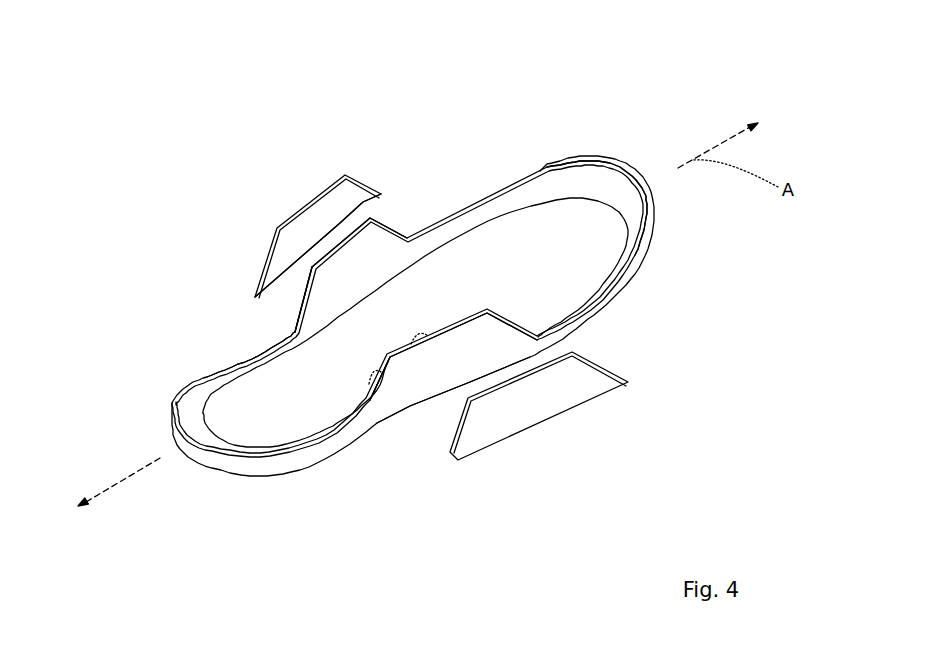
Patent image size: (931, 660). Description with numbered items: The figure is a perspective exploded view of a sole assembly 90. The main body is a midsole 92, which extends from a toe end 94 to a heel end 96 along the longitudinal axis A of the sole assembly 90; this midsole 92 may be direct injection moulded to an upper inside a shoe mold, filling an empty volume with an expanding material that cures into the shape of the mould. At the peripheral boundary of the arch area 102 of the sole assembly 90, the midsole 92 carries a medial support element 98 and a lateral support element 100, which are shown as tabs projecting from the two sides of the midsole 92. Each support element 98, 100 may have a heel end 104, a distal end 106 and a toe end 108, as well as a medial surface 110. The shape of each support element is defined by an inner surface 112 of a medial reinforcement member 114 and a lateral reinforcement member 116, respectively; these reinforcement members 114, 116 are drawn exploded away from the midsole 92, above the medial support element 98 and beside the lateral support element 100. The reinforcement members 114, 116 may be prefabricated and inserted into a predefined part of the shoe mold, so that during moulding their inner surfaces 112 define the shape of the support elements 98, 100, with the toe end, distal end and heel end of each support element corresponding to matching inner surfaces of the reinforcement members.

The sole assembly 90 is at (588, 123).
The midsole 92 is at (320, 398).
The toe end 94 is at (637, 203).
The heel end 96 is at (207, 447).
The medial support element 98 is at (437, 383).
The lateral support element 100 is at (283, 300).
The arch area 102 is at (247, 355).
The heel end of support element 104 is at (327, 293).
The distal end of support element 106 is at (287, 268).
The toe end of support element 108 is at (400, 224).
The medial surface 110 is at (465, 355).
The inner surface 112 is at (335, 210).
The medial reinforcement member 114 is at (578, 390).
The lateral reinforcement member 116 is at (303, 208).